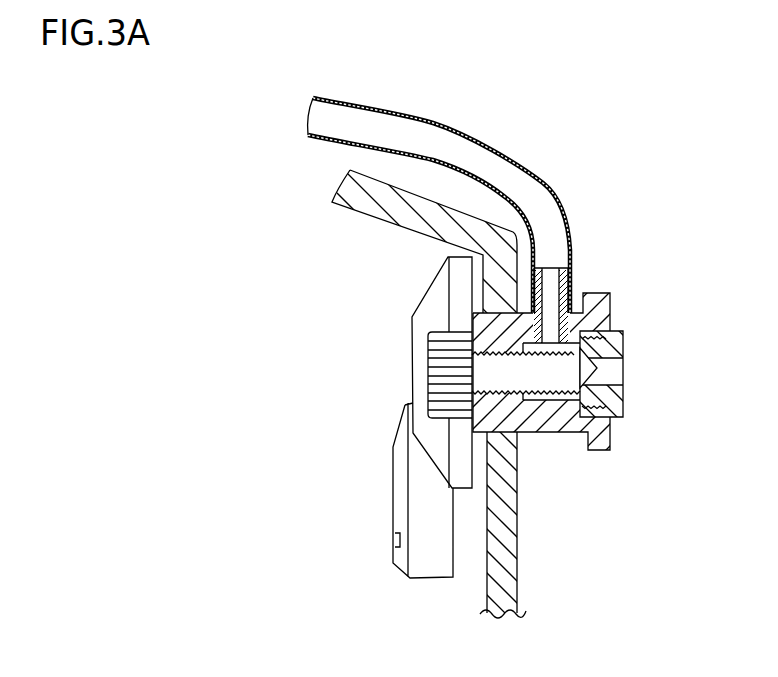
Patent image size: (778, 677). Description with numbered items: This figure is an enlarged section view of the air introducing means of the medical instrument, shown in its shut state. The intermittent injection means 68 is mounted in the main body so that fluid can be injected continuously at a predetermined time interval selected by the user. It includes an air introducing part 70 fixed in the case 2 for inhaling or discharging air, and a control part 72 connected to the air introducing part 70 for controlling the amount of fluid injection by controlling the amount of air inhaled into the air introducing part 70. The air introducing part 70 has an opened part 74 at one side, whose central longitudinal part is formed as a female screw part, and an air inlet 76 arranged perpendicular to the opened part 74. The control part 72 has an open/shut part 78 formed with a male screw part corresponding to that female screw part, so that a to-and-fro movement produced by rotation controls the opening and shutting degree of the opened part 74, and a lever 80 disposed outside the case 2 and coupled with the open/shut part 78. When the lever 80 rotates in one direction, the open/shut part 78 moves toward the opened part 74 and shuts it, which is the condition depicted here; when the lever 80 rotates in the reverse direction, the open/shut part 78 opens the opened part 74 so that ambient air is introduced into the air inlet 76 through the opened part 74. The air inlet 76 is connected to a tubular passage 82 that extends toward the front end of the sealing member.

The case 2 is at (365, 202).
The intermittent injection means 68 is at (394, 417).
The air introducing part 70 is at (575, 443).
The control part 72 is at (400, 337).
The opened part 74 is at (610, 362).
The air inlet 76 is at (560, 262).
The open/shut part 78 is at (581, 388).
The lever 80 is at (400, 511).
The tubular passage 82 is at (493, 152).